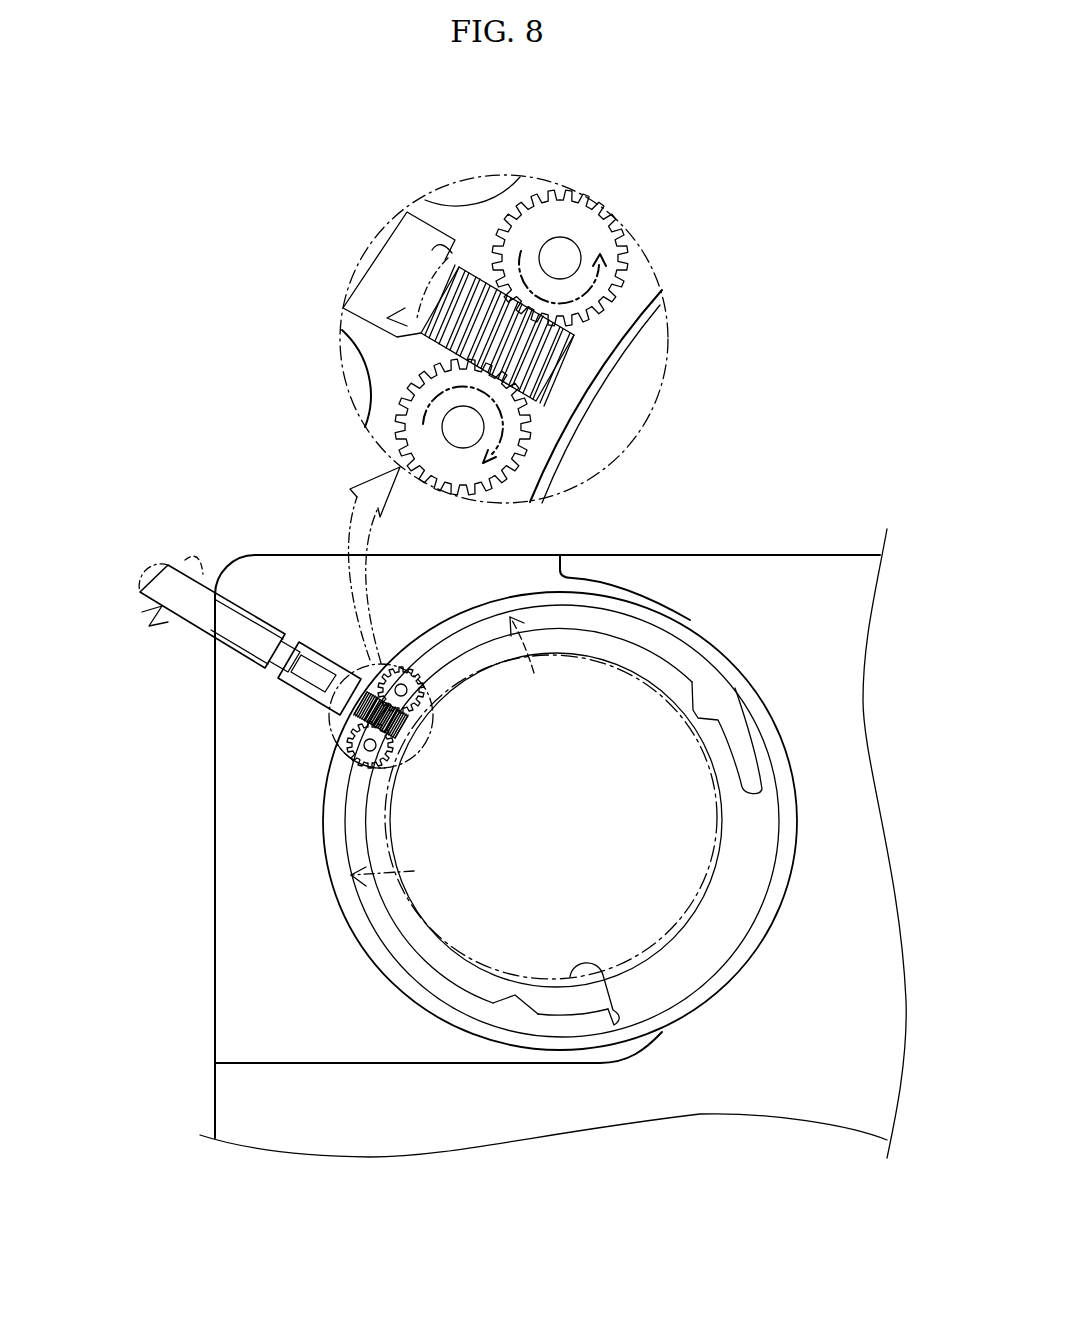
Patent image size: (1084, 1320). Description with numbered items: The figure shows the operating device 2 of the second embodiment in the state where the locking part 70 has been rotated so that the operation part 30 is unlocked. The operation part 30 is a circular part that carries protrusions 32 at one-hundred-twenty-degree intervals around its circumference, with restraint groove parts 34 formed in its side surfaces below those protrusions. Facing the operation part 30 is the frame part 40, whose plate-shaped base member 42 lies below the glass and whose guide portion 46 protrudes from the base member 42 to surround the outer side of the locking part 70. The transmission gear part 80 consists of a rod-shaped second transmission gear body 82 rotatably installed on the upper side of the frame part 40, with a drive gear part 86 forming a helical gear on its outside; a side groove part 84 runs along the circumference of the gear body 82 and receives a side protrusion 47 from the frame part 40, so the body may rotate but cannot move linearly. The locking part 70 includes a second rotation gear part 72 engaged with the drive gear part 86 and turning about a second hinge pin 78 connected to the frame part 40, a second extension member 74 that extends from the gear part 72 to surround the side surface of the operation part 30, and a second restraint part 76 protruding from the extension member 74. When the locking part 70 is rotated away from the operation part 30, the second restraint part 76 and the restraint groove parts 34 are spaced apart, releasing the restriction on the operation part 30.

The operating device 2 is at (733, 327).
The operation part 30 is at (612, 834).
The protrusions 32 is at (470, 968).
The restraint groove parts 34 is at (612, 1012).
The frame part 40 is at (150, 821).
The base member 42 is at (427, 953).
The guide portion 46 is at (214, 918).
The side protrusion 47 is at (273, 673).
The locking part 70 is at (712, 655).
The second rotation gear part 72 is at (548, 213).
The second extension member 74 is at (647, 637).
The second restraint part 76 is at (705, 720).
The second hinge pin 78 is at (468, 427).
The transmission gear part 80 is at (132, 614).
The second transmission gear body 82 is at (170, 585).
The side groove part 84 is at (290, 657).
The drive gear part 86 is at (443, 245).